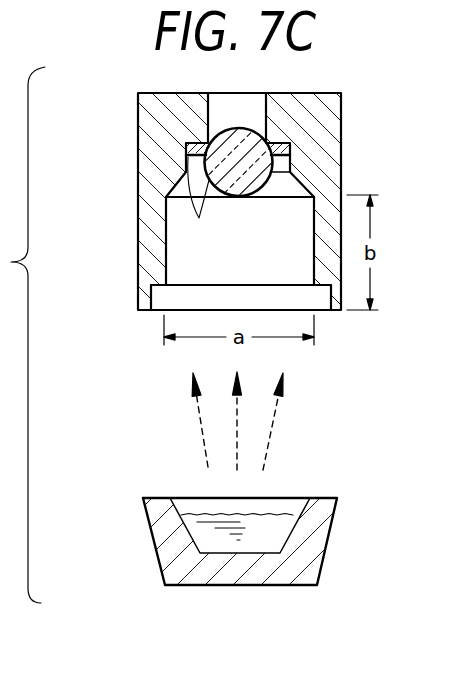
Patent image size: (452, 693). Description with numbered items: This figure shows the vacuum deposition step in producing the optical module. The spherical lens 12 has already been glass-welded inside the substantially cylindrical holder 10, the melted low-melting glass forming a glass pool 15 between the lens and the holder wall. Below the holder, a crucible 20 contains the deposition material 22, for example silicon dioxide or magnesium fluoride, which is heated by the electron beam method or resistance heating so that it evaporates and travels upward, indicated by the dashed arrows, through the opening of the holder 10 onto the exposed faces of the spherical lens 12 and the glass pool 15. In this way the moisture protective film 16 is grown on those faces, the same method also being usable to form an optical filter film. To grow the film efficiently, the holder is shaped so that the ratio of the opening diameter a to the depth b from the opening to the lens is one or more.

The holder 10 is at (330, 125).
The spherical lens 12 is at (260, 165).
The glass pool 15 is at (207, 143).
The moisture protective film 16 is at (199, 219).
The crucible 20 is at (310, 518).
The deposition material 22 is at (260, 528).